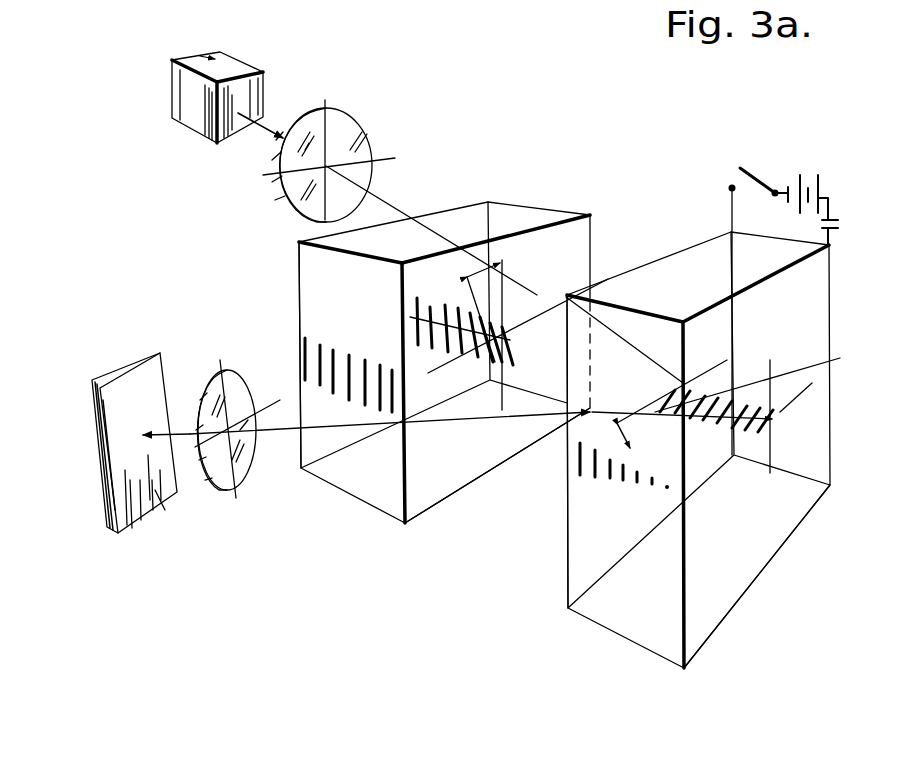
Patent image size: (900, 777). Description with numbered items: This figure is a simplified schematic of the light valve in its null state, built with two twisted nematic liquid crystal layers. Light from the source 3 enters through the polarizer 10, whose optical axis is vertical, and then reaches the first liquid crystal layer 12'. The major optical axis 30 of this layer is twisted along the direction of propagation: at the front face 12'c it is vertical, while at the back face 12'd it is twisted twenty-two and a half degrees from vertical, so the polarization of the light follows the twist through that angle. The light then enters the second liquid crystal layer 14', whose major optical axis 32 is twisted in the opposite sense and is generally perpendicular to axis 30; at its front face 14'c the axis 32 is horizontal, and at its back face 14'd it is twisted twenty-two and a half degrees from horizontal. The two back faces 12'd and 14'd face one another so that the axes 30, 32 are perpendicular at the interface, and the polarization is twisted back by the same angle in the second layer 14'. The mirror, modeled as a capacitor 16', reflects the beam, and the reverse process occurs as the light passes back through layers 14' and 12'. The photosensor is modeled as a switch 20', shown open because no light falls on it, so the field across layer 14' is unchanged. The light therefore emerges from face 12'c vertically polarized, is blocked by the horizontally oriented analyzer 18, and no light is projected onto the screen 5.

The laser light source 3 is at (172, 60).
The polarizer 10 is at (358, 110).
The screen 5 is at (151, 353).
The analyzer 18 is at (217, 490).
The first twisted nematic liquid crystal layer 12' is at (444, 375).
The front face of first liquid crystal layer 12'c is at (279, 355).
The back face of first liquid crystal layer 12'd is at (497, 473).
The major optical axis of first liquid crystal layer 30 is at (427, 298).
The second twisted nematic liquid crystal layer 14' is at (697, 450).
The back face of second liquid crystal layer 14'd is at (538, 451).
The front face of second liquid crystal layer 14'c is at (757, 576).
The major optical axis of second liquid crystal layer 32 is at (741, 404).
The capacitor 16' is at (805, 315).
The switch 20' is at (765, 167).